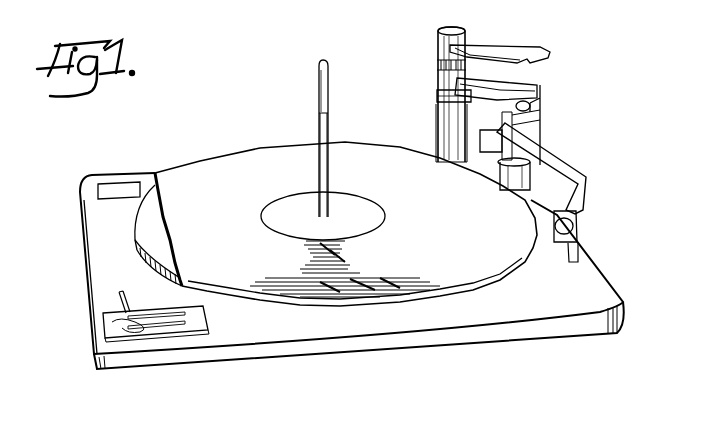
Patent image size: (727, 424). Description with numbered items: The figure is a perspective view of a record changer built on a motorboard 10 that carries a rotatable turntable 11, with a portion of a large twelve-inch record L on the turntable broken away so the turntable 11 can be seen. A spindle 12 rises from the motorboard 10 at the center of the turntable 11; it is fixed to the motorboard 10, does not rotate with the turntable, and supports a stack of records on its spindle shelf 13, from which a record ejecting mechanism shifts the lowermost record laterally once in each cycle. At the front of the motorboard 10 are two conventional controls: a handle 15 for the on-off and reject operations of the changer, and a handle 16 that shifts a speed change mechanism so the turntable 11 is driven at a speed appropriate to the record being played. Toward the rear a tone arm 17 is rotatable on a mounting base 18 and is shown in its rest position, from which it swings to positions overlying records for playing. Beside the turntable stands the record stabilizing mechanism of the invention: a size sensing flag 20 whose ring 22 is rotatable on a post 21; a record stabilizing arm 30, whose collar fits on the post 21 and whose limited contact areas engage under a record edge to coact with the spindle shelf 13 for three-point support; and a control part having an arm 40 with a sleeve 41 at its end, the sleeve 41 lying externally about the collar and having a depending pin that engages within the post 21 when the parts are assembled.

The motorboard 10 is at (586, 292).
The turntable 11 is at (142, 233).
The 12" record L is at (198, 177).
The spindle 12 is at (319, 70).
The spindle shelf 13 is at (319, 108).
The handle 15 is at (125, 318).
The handle 16 is at (118, 292).
The tone arm 17 is at (563, 165).
The mounting base 18 is at (516, 184).
The size sensing flag 20 is at (437, 64).
The post 21 is at (445, 123).
The ring 22 is at (457, 112).
The arm 30 is at (533, 78).
The arm 40 is at (505, 50).
The sleeve 41 is at (455, 27).